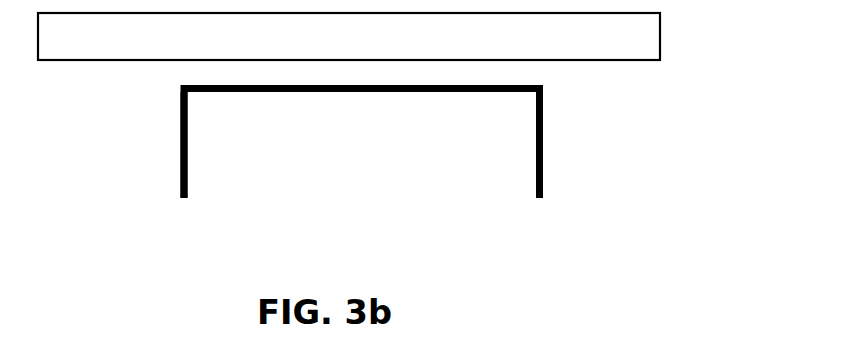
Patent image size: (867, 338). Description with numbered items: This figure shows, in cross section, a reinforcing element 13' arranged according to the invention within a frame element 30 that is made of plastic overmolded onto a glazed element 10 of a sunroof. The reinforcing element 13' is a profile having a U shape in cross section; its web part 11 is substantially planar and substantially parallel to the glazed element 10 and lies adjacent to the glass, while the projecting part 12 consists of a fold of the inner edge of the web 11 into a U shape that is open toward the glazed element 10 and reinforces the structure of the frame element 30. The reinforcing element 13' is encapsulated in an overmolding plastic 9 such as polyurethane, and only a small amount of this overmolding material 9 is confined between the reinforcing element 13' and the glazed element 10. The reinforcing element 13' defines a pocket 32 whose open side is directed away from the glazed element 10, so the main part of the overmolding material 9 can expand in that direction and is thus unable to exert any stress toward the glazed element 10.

The overmolding plastic 9 is at (362, 144).
The glazed element 10 is at (349, 36).
The web part 11 is at (362, 133).
The projecting part 12 is at (339, 173).
The reinforcing element 13' is at (618, 140).
The frame element 30 is at (668, 145).
The pocket 32 is at (334, 162).